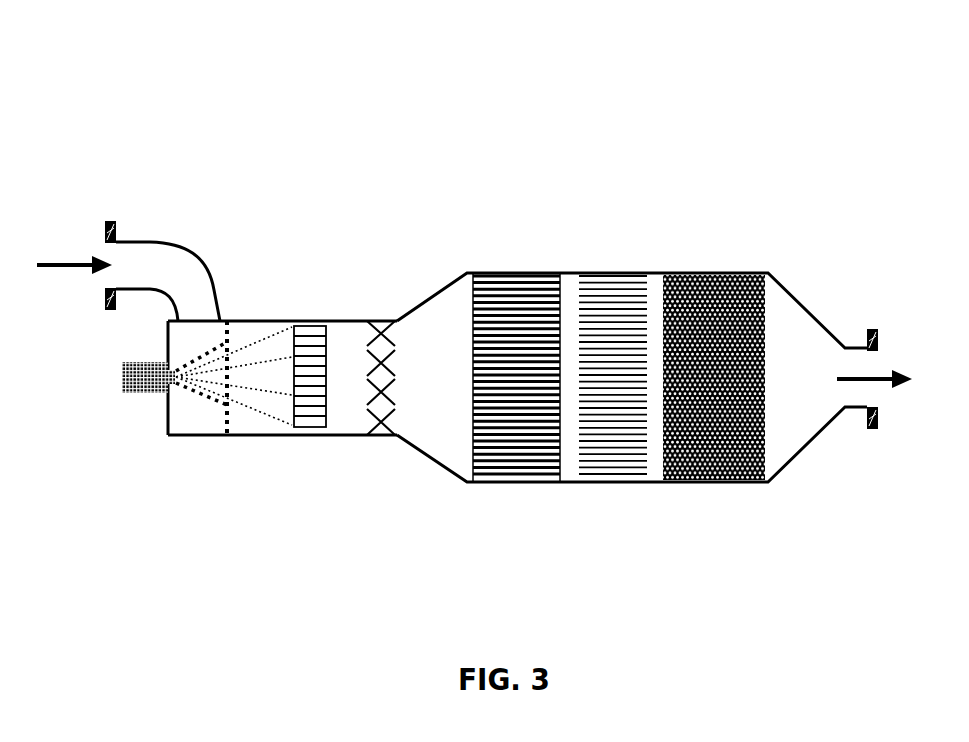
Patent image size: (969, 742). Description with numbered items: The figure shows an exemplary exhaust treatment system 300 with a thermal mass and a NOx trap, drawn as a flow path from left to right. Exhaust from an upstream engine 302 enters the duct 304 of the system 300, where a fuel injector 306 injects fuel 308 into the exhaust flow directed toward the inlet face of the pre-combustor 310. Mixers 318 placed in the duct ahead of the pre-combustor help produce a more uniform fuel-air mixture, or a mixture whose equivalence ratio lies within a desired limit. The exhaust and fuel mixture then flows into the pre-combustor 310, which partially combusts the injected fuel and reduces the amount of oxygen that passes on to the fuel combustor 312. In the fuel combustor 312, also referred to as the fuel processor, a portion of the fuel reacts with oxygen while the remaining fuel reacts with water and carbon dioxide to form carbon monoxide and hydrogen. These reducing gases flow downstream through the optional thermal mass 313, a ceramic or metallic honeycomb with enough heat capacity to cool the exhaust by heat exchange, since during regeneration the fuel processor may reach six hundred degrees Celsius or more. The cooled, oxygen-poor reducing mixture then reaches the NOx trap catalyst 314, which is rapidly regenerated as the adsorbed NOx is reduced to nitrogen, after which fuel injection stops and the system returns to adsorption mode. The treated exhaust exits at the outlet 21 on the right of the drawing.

The system 300 is at (457, 33).
The upstream engine 302 is at (50, 258).
The duct 304 is at (183, 252).
The fuel injector 306 is at (140, 393).
The fuel 308 is at (270, 360).
The pre-combustor 310 is at (310, 350).
The fuel combustor 312 is at (537, 313).
The thermal mass 313 is at (605, 310).
The NOx trap catalyst 314 is at (694, 300).
The mixers 318 is at (385, 382).
The exhaust outlet flow 21 is at (856, 379).